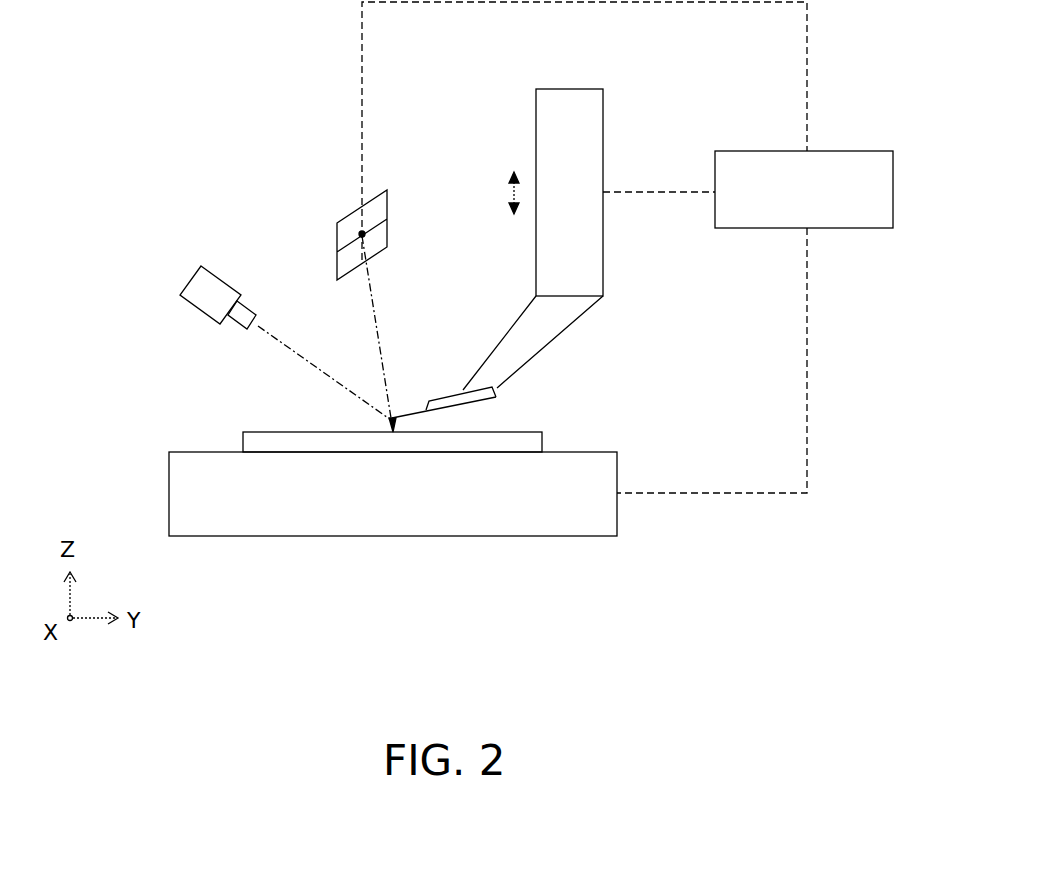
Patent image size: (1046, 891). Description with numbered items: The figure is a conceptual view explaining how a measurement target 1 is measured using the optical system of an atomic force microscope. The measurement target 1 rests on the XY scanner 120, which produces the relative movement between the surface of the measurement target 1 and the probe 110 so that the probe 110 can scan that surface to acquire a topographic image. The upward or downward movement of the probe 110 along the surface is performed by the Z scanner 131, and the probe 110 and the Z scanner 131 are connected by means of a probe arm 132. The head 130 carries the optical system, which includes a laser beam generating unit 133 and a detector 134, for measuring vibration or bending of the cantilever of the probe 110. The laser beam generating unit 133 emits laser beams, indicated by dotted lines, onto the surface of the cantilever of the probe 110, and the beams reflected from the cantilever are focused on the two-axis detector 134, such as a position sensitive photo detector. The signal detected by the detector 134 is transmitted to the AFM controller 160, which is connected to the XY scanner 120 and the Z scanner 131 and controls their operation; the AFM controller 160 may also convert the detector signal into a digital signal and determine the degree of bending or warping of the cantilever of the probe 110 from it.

The measurement target 1 is at (257, 442).
The probe 110 is at (412, 397).
The XY scanner 120 is at (197, 526).
The head 130 is at (264, 255).
The Z scanner 131 is at (590, 113).
The probe arm 132 is at (537, 335).
The laser beam generating unit 133 is at (202, 302).
The detector 134 is at (343, 225).
The AFM controller 160 is at (877, 168).